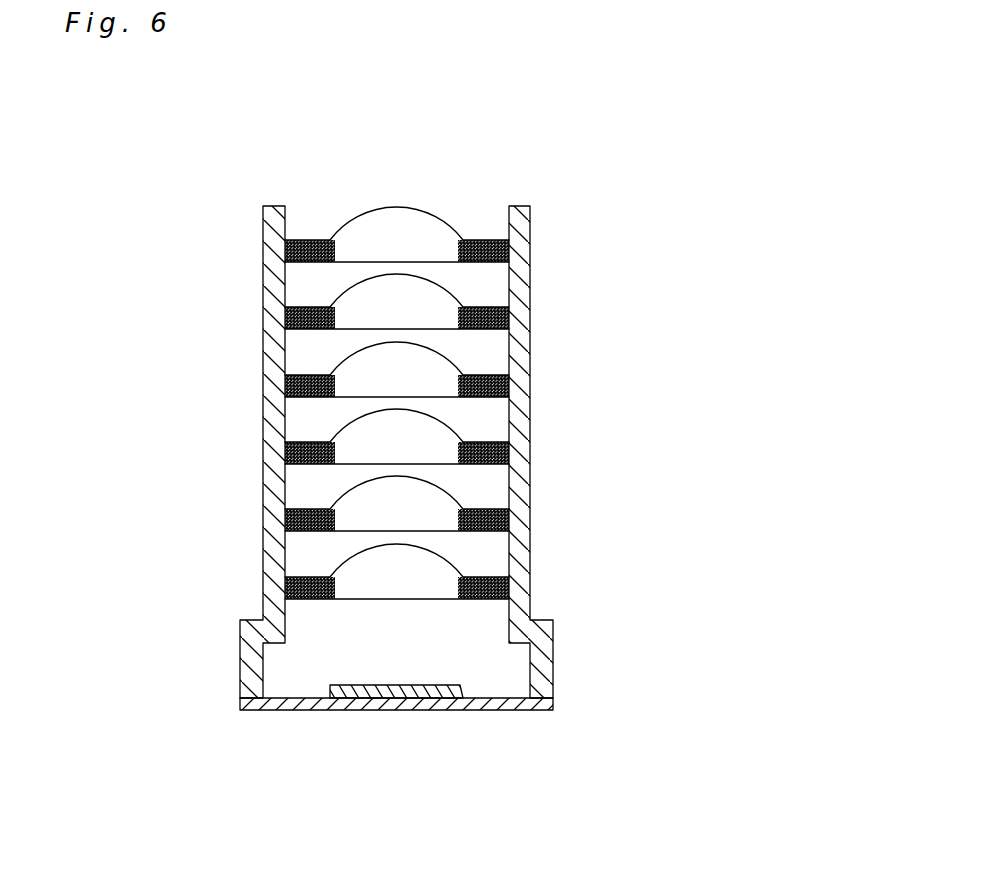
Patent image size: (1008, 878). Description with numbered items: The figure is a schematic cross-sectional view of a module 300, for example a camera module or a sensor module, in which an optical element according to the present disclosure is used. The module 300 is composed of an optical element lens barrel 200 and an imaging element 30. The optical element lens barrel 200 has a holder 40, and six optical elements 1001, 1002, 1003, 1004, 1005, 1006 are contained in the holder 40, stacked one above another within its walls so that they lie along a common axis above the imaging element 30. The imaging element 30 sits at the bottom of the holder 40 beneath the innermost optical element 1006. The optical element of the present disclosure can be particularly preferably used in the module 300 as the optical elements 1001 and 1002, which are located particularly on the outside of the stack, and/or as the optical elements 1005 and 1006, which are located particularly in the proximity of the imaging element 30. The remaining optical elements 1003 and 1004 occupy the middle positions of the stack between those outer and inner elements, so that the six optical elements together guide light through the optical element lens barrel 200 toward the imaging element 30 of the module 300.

The module 300 is at (578, 143).
The optical element lens barrel 200 is at (521, 418).
The optical element 1001 is at (493, 248).
The optical element 1002 is at (493, 317).
The optical element 1003 is at (493, 382).
The optical element 1004 is at (493, 448).
The optical element 1005 is at (493, 515).
The optical element 1006 is at (493, 578).
The holder 40 is at (541, 641).
The imaging element 30 is at (457, 690).